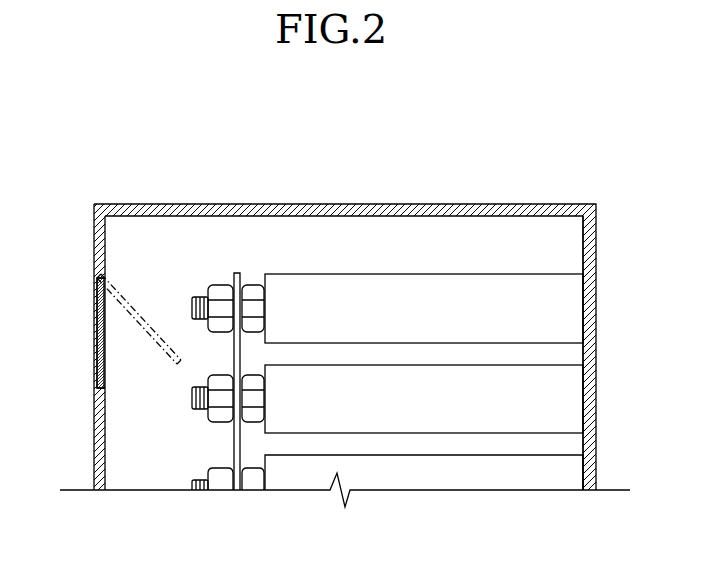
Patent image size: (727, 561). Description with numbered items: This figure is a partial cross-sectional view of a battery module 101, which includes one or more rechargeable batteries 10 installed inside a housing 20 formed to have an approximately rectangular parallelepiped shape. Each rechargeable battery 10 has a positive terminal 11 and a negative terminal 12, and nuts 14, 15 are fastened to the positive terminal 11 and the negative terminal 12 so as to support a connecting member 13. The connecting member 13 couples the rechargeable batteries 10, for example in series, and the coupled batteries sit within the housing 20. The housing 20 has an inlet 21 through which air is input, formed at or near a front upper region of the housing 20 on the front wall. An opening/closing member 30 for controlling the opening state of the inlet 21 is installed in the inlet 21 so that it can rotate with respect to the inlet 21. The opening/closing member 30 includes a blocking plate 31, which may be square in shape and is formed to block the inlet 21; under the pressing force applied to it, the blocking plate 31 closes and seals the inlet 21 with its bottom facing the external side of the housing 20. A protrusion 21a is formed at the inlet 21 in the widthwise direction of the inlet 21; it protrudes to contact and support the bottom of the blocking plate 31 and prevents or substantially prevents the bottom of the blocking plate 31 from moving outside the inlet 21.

The battery module 101 is at (364, 153).
The rechargeable battery 10 is at (450, 274).
The positive terminal 11 is at (198, 413).
The negative terminal 12 is at (200, 296).
The connecting member 13 is at (236, 272).
The nut 14 is at (253, 283).
The nut 15 is at (222, 283).
The housing 20 is at (598, 297).
The inlet 21 is at (94, 366).
The protrusion 21a is at (96, 386).
The opening/closing member 30 is at (96, 308).
The blocking plate 31 is at (97, 330).